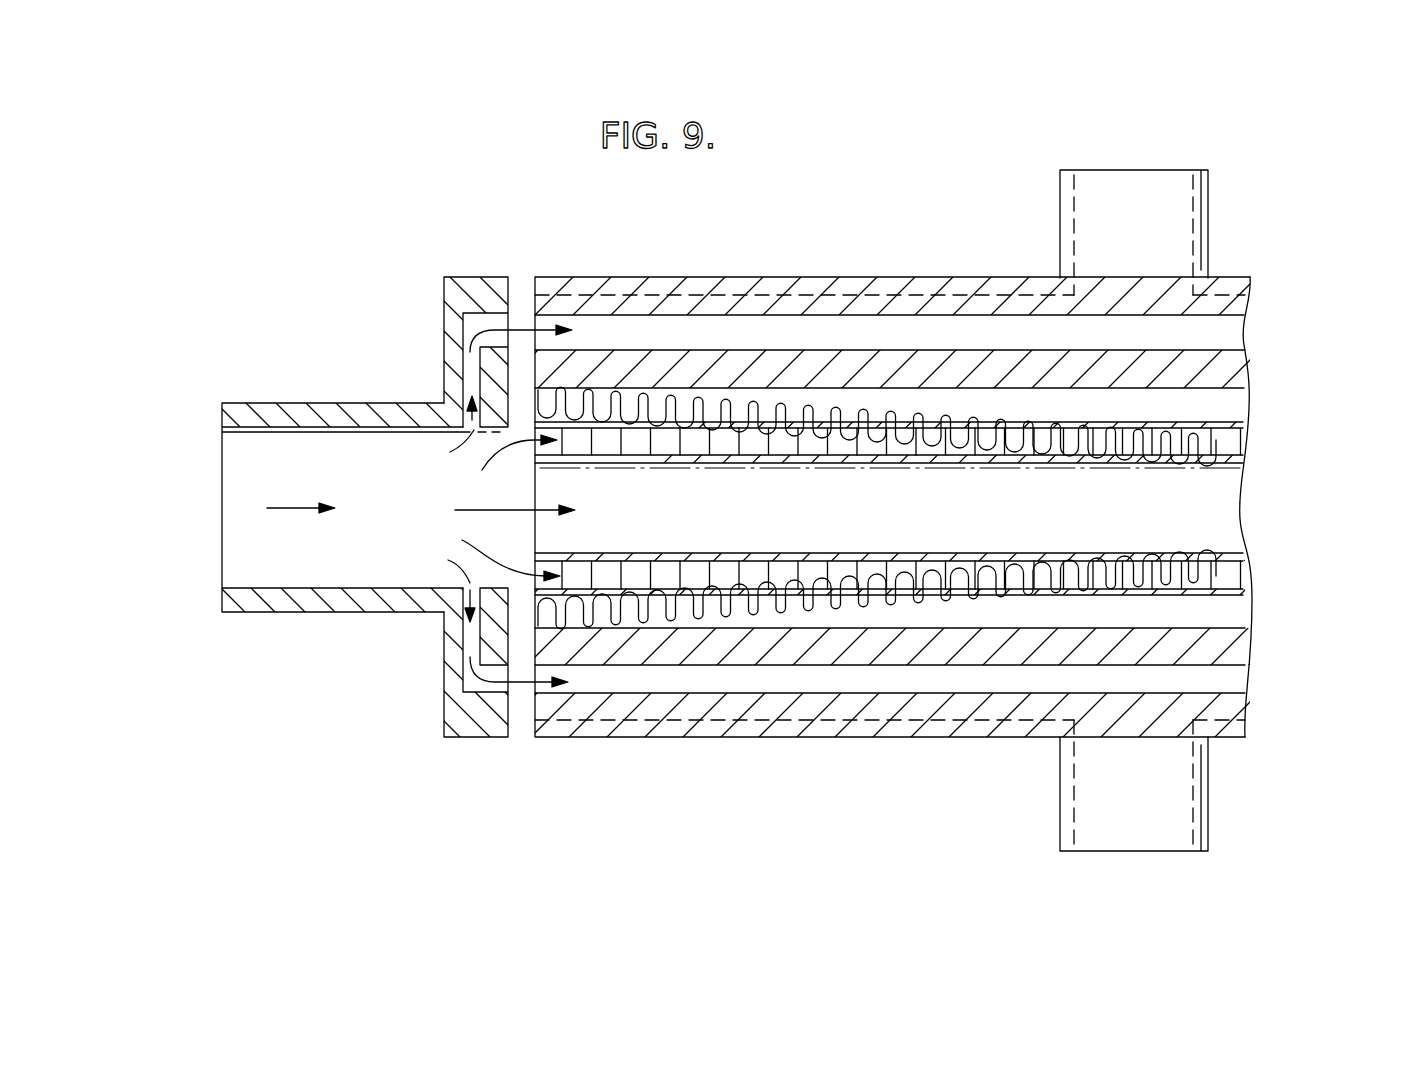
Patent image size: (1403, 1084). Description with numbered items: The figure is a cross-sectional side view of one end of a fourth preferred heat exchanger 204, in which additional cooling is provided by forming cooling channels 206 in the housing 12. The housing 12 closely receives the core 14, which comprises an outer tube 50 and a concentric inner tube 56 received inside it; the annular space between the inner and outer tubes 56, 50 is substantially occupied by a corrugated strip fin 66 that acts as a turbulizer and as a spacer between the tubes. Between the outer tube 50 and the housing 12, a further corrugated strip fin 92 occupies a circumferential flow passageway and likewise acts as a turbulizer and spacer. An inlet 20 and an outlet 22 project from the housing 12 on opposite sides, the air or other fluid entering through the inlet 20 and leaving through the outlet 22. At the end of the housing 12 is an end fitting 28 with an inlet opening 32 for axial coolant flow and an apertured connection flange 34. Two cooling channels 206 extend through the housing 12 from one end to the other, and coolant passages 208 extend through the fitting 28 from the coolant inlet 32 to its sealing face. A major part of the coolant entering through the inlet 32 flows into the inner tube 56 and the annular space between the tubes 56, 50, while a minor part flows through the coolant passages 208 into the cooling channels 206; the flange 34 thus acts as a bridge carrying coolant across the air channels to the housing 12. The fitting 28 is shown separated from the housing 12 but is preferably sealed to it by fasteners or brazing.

The housing 12 is at (752, 741).
The core 14 is at (1283, 388).
The inlet 20 is at (1062, 195).
The outlet 22 is at (1058, 808).
The end fitting 28 is at (315, 402).
The inlet opening 32 is at (235, 563).
The connection flange 34 is at (442, 665).
The outer tube 50 is at (787, 392).
The inner tube 56 is at (700, 466).
The corrugated strip fin 66 is at (832, 440).
The corrugated strip fin 92 is at (715, 392).
The heat exchanger 204 is at (519, 262).
The cooling channels 206 is at (1240, 333).
The coolant passages 208 is at (507, 690).